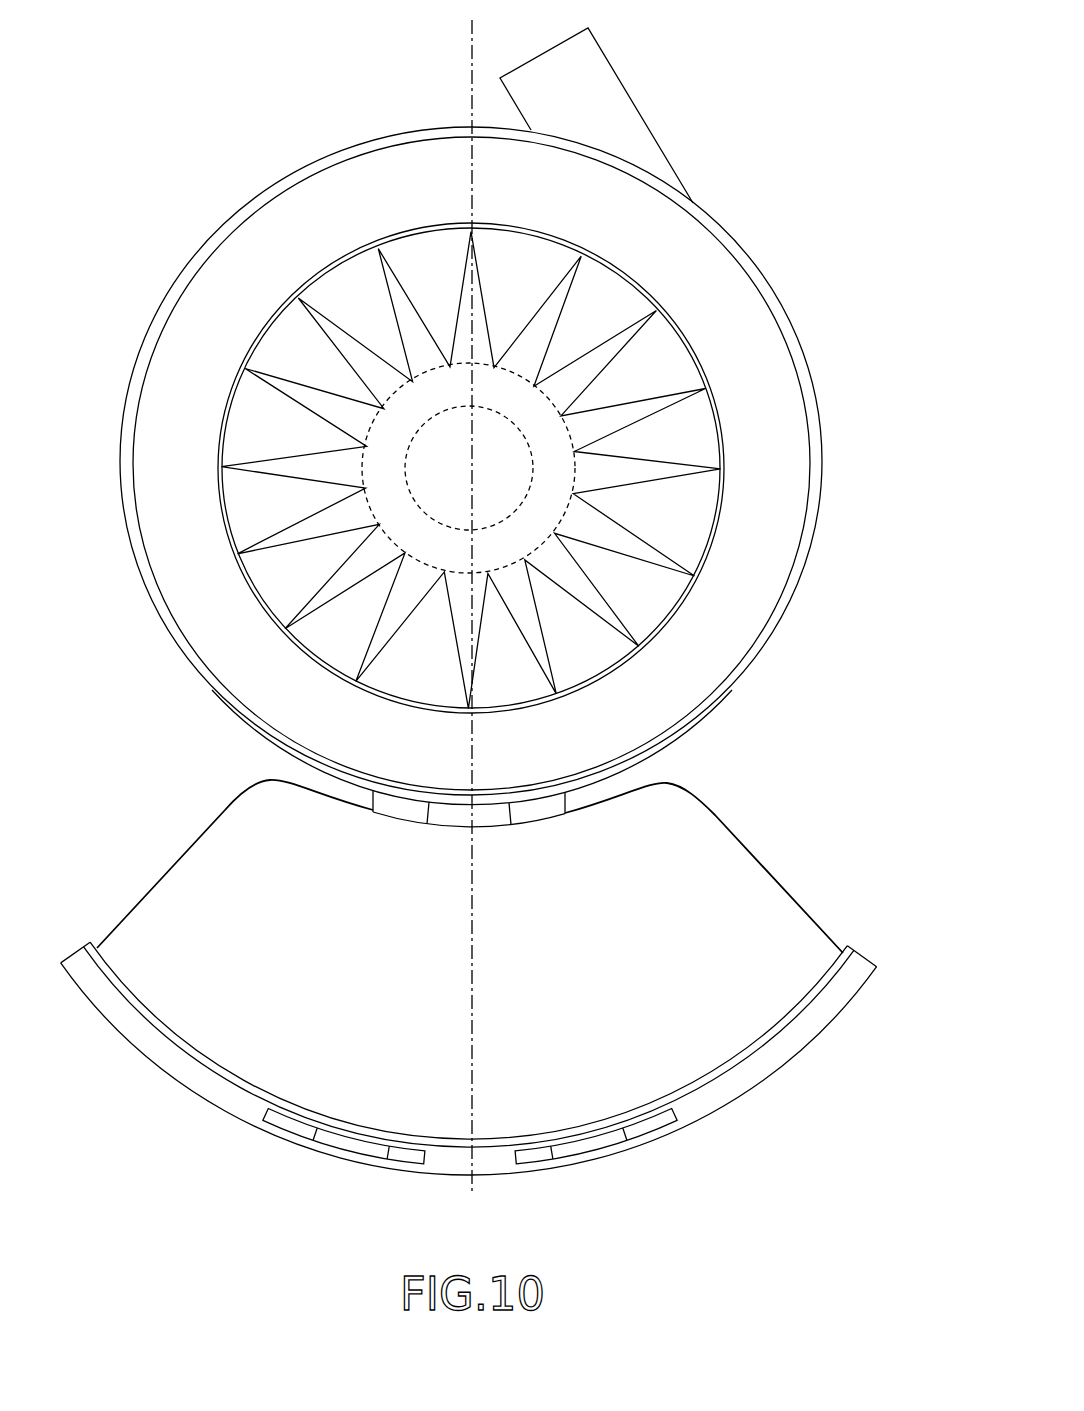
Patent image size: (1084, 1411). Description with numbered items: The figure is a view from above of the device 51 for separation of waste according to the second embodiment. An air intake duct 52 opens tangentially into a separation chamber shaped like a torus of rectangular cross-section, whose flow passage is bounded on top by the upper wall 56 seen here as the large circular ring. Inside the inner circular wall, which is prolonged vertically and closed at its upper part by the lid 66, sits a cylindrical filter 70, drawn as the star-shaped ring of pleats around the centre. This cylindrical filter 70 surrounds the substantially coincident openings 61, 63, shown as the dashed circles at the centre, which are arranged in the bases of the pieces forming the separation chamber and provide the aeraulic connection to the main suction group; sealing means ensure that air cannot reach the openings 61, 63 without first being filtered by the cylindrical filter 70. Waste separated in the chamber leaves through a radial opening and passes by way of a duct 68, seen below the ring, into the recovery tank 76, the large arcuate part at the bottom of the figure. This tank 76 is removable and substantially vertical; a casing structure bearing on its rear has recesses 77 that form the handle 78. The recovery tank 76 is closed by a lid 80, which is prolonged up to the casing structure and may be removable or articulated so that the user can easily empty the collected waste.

The device for separation of waste 51 is at (506, 411).
The air intake duct 52 is at (587, 87).
The upper wall 56 is at (170, 345).
The opening 61 is at (508, 493).
The opening 63 is at (669, 518).
The lid 66 is at (293, 335).
The duct 68 is at (605, 779).
The cylindrical filter 70 is at (420, 307).
The recovery tank 76 is at (477, 1000).
The recesses 77 is at (292, 1123).
The handle 78 is at (488, 1160).
The lid 80 is at (180, 883).